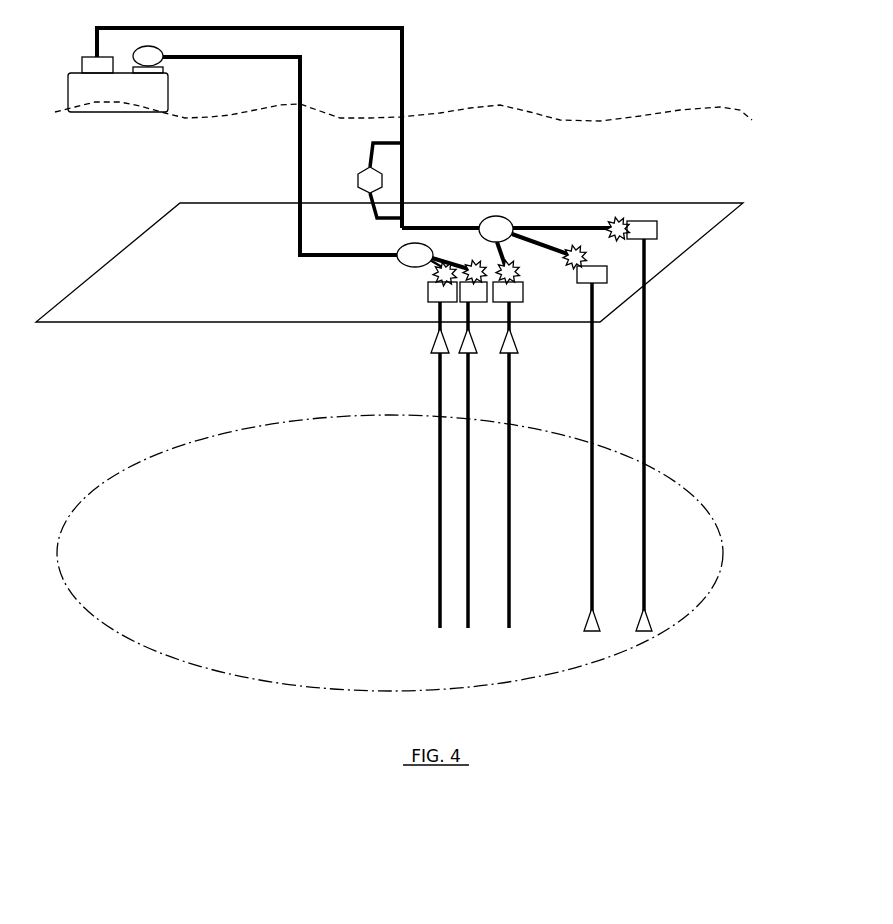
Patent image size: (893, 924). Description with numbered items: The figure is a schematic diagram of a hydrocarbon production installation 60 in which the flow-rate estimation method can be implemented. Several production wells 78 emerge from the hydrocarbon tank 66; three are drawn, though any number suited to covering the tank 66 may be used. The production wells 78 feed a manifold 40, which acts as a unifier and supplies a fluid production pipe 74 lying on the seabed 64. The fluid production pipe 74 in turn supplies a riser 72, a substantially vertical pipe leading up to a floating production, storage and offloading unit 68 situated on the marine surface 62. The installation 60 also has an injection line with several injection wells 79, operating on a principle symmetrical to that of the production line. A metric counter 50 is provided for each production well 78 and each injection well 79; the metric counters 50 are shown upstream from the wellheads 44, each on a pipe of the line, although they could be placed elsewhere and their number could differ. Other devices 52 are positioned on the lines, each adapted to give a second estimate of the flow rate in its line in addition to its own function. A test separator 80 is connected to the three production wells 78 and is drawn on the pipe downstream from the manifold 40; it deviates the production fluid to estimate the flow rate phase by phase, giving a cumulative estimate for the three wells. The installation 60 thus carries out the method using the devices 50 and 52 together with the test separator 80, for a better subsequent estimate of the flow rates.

The manifold 40 is at (490, 216).
The wellheads 44 is at (430, 290).
The metric counter 50 is at (480, 266).
The other devices 52 is at (431, 344).
The installation 60 is at (548, 68).
The marine surface 62 is at (680, 110).
The seabed 64 is at (733, 212).
The hydrocarbon tank 66 is at (683, 587).
The floating production, storage and offloading unit 68 is at (95, 93).
The riser 72 is at (403, 74).
The fluid production pipe 74 is at (445, 226).
The production wells 78 is at (590, 528).
The injection wells 79 is at (465, 543).
The test separator 80 is at (358, 178).